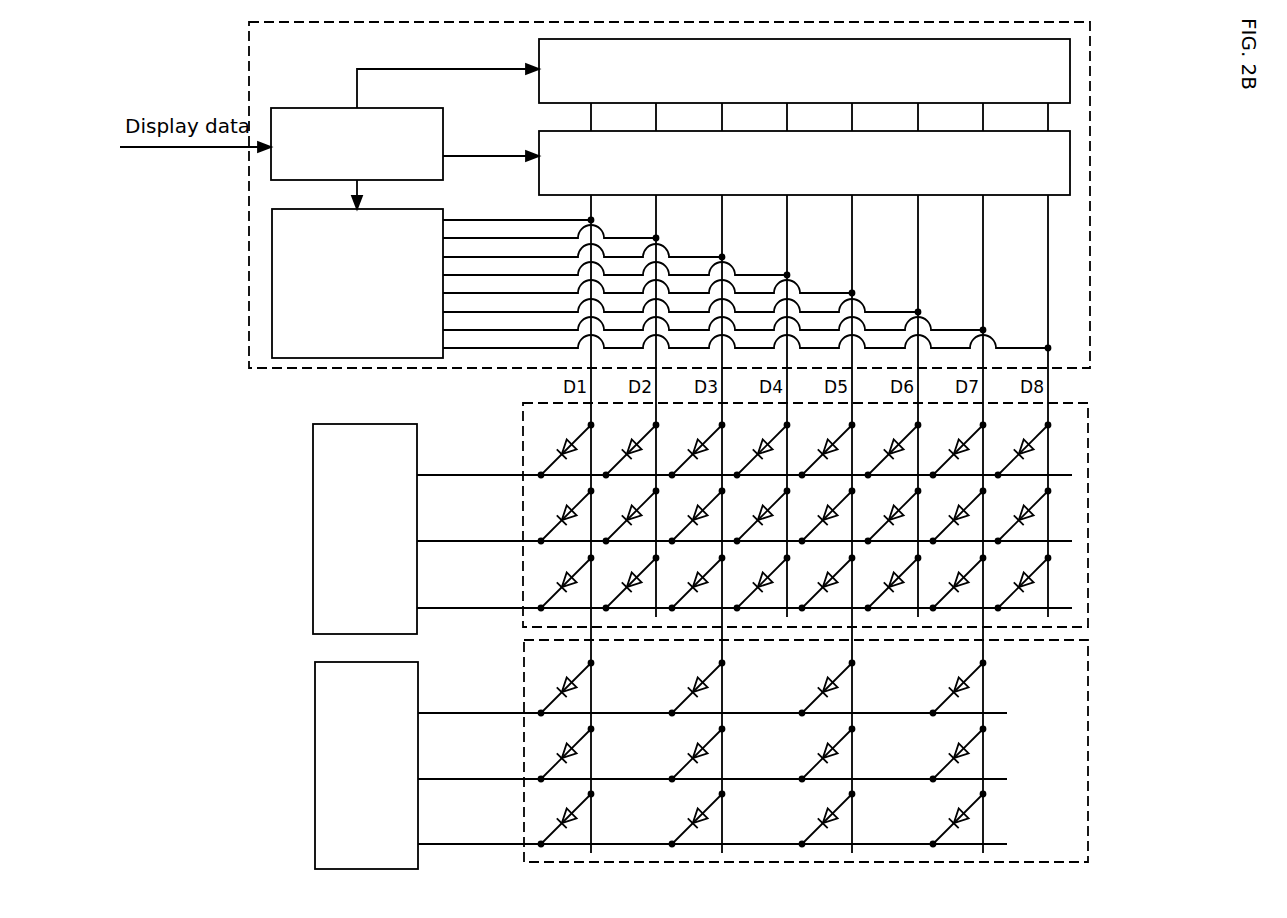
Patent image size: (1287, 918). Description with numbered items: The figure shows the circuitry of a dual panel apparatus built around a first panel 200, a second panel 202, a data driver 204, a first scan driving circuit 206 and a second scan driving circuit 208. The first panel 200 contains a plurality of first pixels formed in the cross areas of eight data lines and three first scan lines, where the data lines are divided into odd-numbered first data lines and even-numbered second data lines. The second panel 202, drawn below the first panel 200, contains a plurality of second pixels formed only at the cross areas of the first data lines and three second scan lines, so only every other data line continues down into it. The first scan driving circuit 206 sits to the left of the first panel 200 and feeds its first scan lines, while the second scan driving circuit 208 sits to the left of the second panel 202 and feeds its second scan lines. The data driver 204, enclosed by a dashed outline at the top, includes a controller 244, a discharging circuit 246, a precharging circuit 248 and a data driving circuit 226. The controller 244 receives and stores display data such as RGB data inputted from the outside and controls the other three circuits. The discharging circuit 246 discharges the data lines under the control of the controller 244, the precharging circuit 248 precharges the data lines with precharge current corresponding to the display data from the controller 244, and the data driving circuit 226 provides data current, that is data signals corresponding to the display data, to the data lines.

The first panel 200 is at (1088, 437).
The second panel 202 is at (1088, 717).
The data driver 204 is at (1090, 265).
The first scan driving circuit 206 is at (313, 524).
The second scan driving circuit 208 is at (315, 765).
The data driving circuit 226 is at (1070, 67).
The controller 244 is at (290, 108).
The discharging circuit 246 is at (1070, 156).
The precharging circuit 248 is at (272, 267).